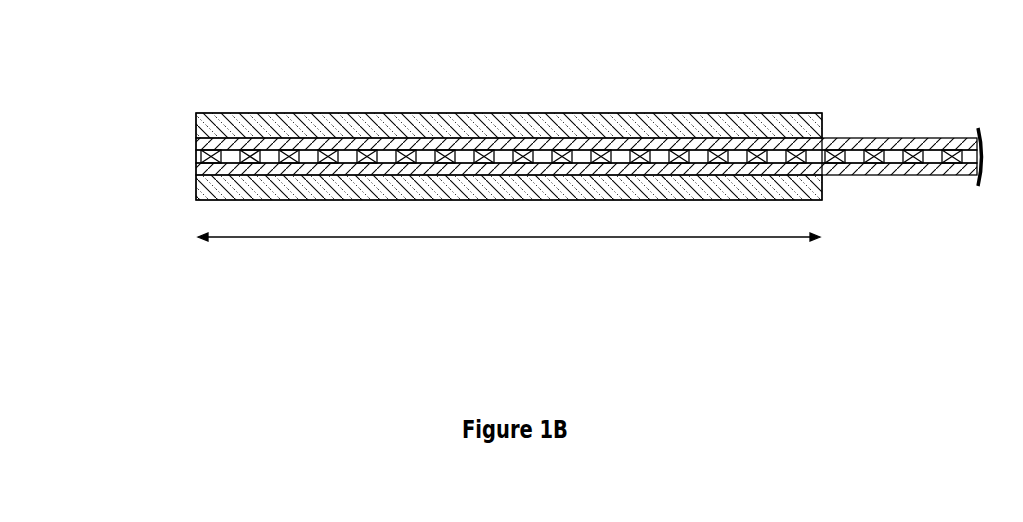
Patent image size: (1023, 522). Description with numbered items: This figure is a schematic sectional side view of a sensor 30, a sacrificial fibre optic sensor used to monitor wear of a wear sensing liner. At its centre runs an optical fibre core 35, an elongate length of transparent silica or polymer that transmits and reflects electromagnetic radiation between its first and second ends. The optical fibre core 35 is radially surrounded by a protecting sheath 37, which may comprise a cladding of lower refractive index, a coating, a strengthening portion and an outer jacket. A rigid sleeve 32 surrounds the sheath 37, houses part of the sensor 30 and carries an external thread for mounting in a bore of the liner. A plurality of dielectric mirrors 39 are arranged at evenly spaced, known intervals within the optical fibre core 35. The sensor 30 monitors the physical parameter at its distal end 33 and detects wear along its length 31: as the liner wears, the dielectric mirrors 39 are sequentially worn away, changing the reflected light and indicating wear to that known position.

The sensor 30 is at (533, 102).
The length 31 is at (445, 238).
The rigid sleeve 32 is at (453, 122).
The distal end 33 is at (196, 132).
The optical fibre core 35 is at (531, 113).
The sheath 37 is at (196, 175).
The dielectric mirrors 39 is at (330, 157).